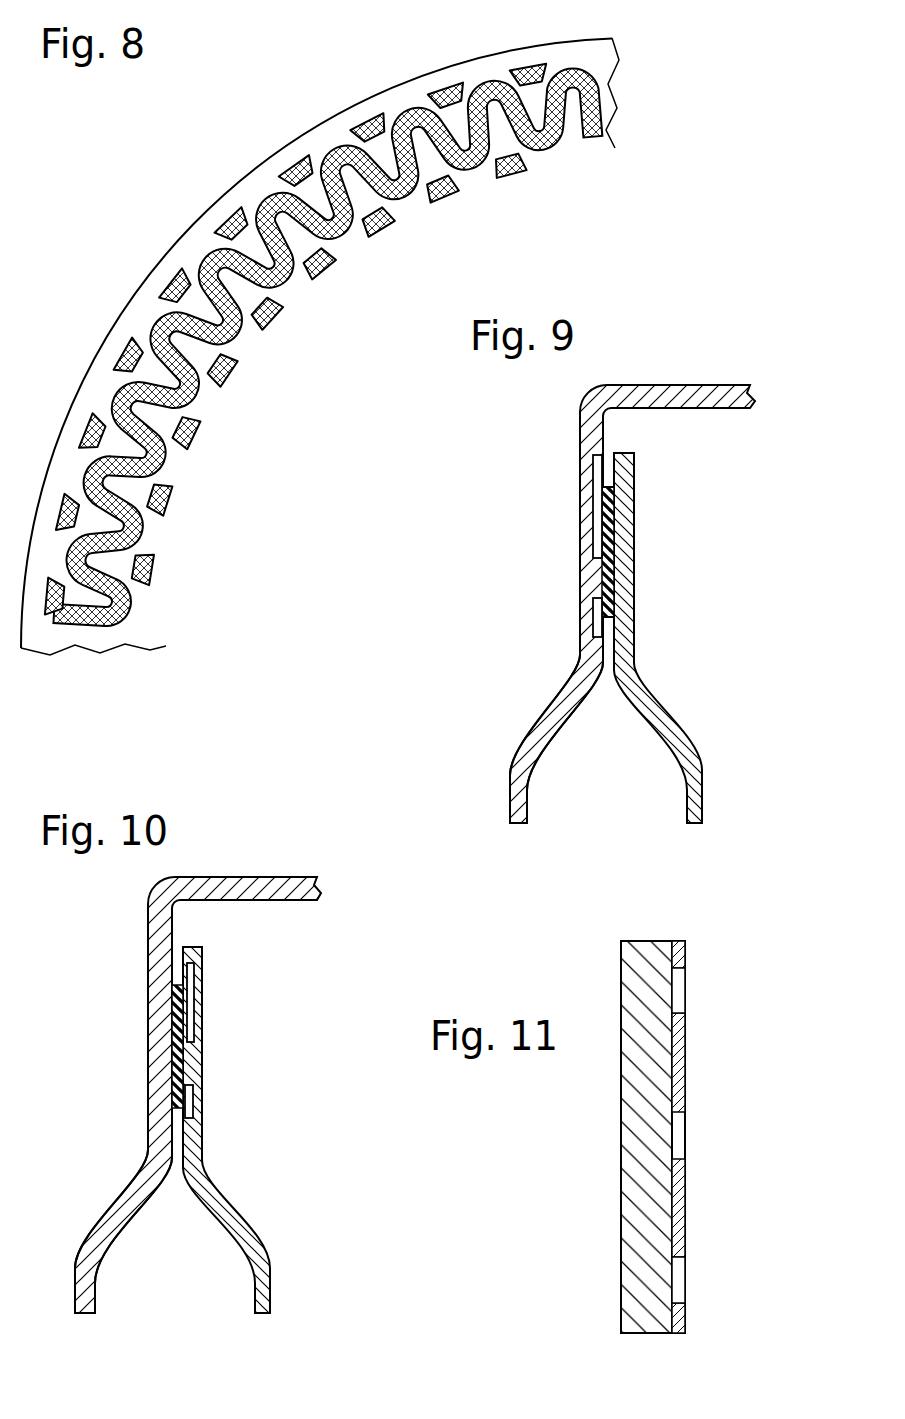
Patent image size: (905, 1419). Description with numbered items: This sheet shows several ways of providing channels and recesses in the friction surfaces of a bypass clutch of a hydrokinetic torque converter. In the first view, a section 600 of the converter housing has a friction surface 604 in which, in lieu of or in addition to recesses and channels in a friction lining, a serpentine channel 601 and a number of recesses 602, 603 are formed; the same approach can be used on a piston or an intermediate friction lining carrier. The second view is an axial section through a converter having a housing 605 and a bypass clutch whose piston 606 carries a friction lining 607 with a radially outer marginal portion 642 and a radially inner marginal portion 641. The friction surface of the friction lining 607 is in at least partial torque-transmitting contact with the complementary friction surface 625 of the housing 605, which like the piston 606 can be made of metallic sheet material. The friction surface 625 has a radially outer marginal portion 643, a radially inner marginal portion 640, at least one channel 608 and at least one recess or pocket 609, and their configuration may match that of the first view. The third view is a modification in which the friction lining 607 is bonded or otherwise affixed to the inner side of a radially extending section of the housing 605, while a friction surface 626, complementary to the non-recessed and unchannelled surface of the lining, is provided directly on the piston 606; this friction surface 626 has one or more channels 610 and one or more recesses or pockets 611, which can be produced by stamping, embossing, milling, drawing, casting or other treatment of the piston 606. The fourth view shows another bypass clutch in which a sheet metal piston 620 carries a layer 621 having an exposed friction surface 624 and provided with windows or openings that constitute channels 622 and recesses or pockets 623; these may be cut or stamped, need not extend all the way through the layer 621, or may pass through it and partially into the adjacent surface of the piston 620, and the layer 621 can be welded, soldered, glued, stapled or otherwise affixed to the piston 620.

In FIG. 8, the housing section 600 is at (325, 95).
In FIG. 8, the channel 601 is at (266, 198).
In FIG. 8, the recess 602 is at (290, 167).
In FIG. 8, the recess 603 is at (314, 270).
In FIG. 8, the friction surface 604 is at (410, 80).
In FIG. 9, the housing 605 is at (719, 387).
In FIG. 10, the housing 605 is at (286, 884).
In FIG. 9, the piston 606 is at (678, 730).
In FIG. 10, the piston 606 is at (245, 1222).
In FIG. 9, the friction lining 607 is at (616, 550).
In FIG. 10, the friction lining 607 is at (170, 1033).
In FIG. 9, the channel 608 is at (597, 497).
In FIG. 9, the recess or pocket 609 is at (593, 623).
In FIG. 10, the channel 610 is at (188, 1012).
In FIG. 10, the recess or pocket 611 is at (192, 1112).
In FIG. 11, the sheet metal piston 620 is at (627, 1156).
In FIG. 11, the layer 621 is at (678, 1190).
In FIG. 11, the channel 622 is at (678, 988).
In FIG. 11, the recess or pocket 623 is at (678, 1285).
In FIG. 11, the friction surface 624 is at (684, 1241).
In FIG. 9, the friction surface 625 is at (605, 570).
In FIG. 10, the friction surface 626 is at (173, 1070).
In FIG. 9, the radially inner marginal portion 640 is at (597, 640).
In FIG. 9, the radially inner marginal portion 641 is at (610, 620).
In FIG. 9, the radially outer marginal portion 642 is at (608, 486).
In FIG. 9, the radially outer marginal portion 643 is at (600, 450).